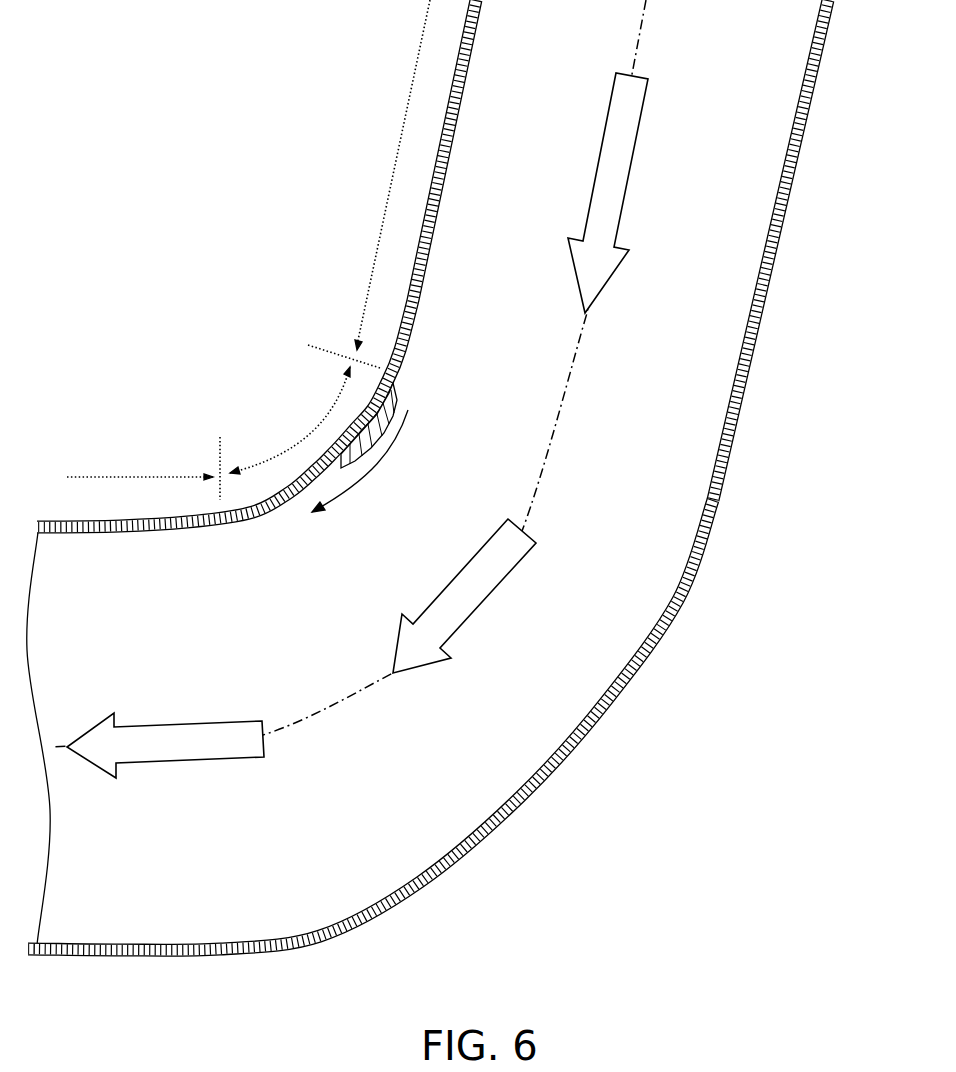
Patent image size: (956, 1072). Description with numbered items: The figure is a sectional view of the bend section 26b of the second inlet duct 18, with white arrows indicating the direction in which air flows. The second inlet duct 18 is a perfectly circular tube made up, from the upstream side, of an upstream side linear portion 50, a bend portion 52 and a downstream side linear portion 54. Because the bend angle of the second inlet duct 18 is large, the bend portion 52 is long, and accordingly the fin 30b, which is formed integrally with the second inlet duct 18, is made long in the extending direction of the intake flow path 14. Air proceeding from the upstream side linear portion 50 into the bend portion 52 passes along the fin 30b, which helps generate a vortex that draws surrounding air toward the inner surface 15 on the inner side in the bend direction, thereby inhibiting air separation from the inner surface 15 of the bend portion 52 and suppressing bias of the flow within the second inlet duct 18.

The intake flow path 14 is at (687, 363).
The inner surface 15 is at (420, 280).
The second inlet duct 18 is at (677, 615).
The bend section 26b is at (260, 346).
The fin 30b is at (397, 407).
The upstream side linear portion 50 is at (387, 200).
The bend portion 52 is at (307, 435).
The downstream side linear portion 54 is at (128, 477).